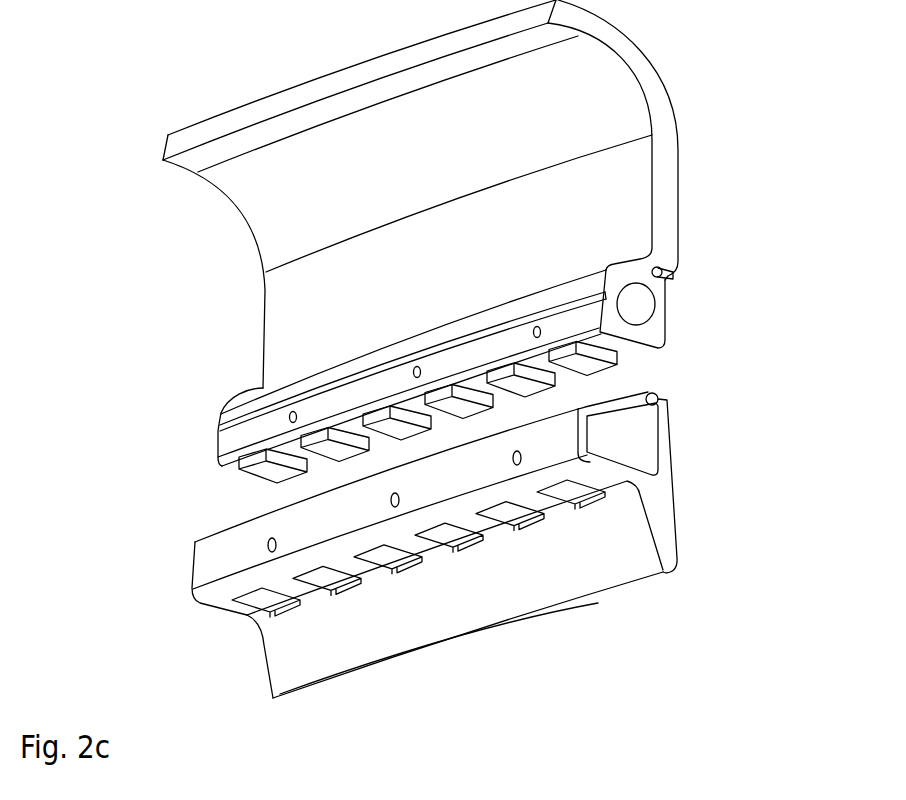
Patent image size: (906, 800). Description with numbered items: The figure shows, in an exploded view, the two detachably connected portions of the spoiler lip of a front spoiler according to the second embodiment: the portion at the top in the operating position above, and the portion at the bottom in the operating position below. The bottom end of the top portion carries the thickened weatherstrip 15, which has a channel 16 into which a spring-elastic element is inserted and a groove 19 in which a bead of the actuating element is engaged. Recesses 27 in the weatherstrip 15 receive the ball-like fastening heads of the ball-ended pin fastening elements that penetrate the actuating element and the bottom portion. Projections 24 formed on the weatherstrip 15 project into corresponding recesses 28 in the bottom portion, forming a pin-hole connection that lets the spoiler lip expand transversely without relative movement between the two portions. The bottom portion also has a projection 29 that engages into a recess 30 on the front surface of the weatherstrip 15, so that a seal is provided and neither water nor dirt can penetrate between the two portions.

The weatherstrip 15 is at (655, 342).
The channel 16 is at (650, 308).
The groove 19 is at (212, 426).
The projections 24 is at (332, 452).
The recesses 27 is at (295, 402).
The recesses 28 is at (253, 606).
The projection 29 is at (659, 400).
The recess 30 is at (664, 272).